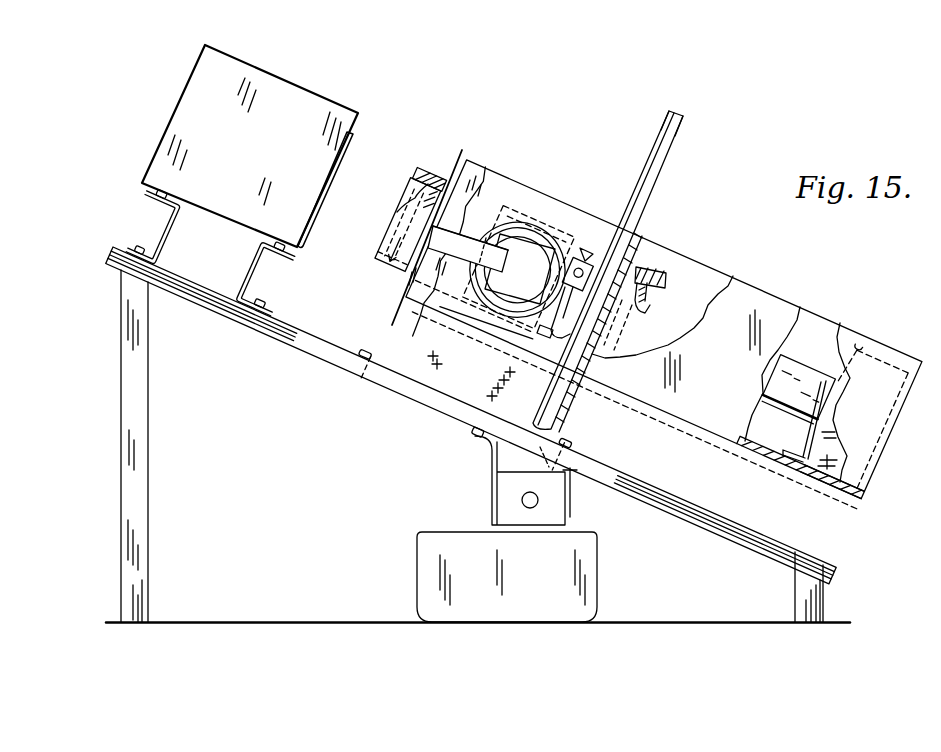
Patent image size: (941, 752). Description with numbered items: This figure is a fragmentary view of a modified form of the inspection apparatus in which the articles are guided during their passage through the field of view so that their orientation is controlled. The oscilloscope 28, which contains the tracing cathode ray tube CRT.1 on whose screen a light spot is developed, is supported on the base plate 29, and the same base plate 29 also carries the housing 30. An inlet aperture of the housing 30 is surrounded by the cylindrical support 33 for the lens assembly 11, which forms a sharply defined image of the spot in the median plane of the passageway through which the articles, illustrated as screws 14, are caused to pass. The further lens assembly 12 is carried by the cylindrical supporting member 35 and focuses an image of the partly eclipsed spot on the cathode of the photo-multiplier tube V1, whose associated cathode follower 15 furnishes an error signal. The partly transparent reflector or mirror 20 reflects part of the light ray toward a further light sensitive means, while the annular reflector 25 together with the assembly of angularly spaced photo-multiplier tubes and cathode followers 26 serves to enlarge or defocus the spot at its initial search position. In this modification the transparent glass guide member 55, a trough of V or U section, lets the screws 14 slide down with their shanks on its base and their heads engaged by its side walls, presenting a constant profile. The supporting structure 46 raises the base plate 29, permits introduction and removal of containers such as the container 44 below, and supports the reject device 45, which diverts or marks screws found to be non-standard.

The oscilloscope 28 is at (273, 86).
The tracing cathode ray tube CRT.1 is at (353, 136).
The lens assembly 11 is at (420, 200).
The cylindrical support 33 is at (423, 170).
The partly transparent reflector or mirror 20 is at (517, 266).
The annular reflector 25 is at (585, 258).
The assembly of angularly spaced photo-multiplier tubes and cathode followers 26 is at (537, 343).
The articles (screws) 14 is at (662, 141).
The guide member 55 is at (684, 120).
The cylindrical supporting member 35 is at (650, 267).
The further lens assembly 12 is at (650, 298).
The housing 30 is at (672, 408).
The photo-multiplier tube V1 is at (805, 415).
The cathode follower 15 is at (828, 468).
The base plate 29 is at (223, 315).
The supporting structure 46 is at (132, 420).
The reject device 45 is at (505, 487).
The container 44 is at (423, 572).